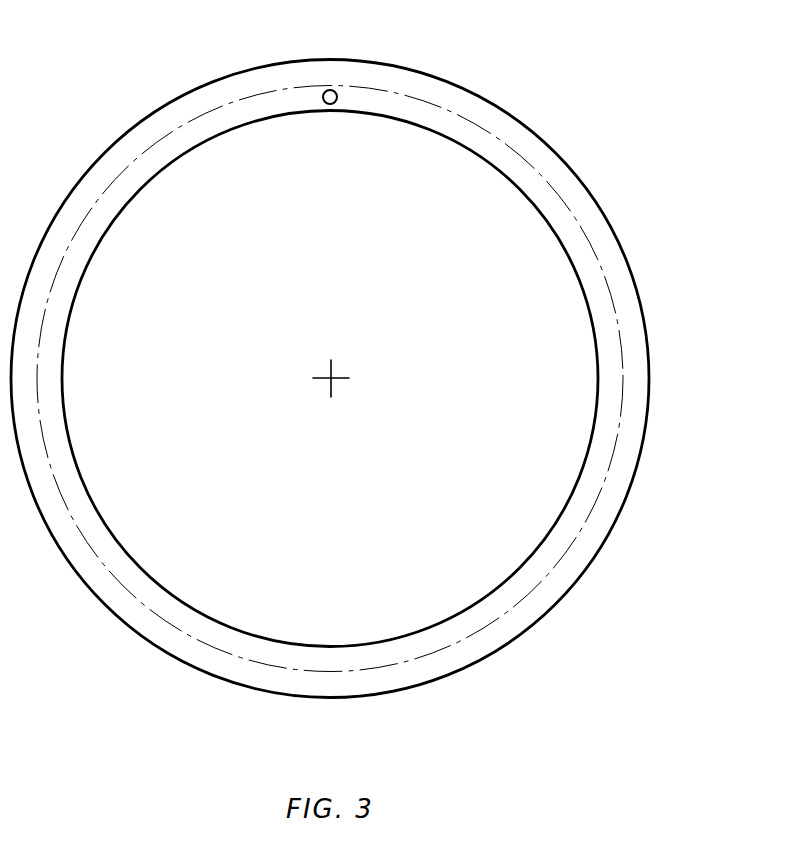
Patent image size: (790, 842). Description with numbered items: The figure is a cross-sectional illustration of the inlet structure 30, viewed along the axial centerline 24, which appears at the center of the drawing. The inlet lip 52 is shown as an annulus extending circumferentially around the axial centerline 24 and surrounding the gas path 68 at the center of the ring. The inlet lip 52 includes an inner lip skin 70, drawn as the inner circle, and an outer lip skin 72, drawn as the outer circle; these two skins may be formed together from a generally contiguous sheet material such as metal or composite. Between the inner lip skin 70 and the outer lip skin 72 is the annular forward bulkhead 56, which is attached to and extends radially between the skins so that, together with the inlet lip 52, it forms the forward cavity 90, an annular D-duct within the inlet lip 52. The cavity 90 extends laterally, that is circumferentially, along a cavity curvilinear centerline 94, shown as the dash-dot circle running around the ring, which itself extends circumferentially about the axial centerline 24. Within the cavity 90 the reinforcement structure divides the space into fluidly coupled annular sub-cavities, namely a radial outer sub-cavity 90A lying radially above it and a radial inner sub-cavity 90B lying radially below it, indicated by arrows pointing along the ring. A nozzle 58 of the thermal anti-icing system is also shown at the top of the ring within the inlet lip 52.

The inlet structure 30 is at (566, 77).
The inlet lip 52 is at (662, 375).
The forward bulkhead 56 is at (587, 205).
The nozzle 58 is at (330, 104).
The gas path 68 is at (269, 350).
The inner lip skin 70 is at (585, 294).
The outer lip skin 72 is at (635, 273).
The axial centerline 24 is at (329, 380).
The forward cavity 90 is at (133, 637).
The radial outer sub-cavity 90A is at (158, 126).
The radial inner sub-cavity 90B is at (169, 154).
The cavity curvilinear centerline 94 is at (463, 638).